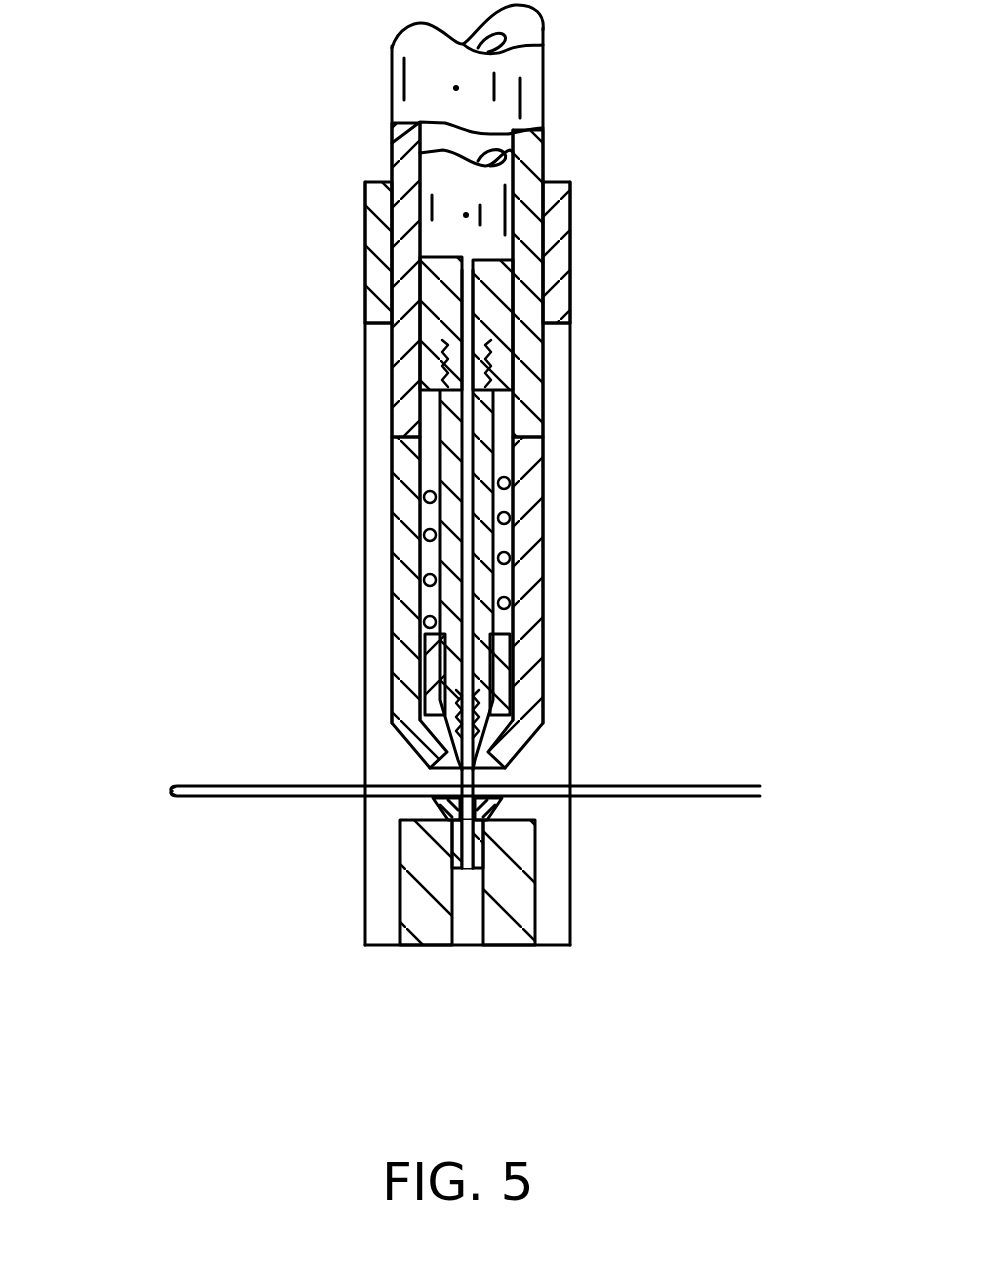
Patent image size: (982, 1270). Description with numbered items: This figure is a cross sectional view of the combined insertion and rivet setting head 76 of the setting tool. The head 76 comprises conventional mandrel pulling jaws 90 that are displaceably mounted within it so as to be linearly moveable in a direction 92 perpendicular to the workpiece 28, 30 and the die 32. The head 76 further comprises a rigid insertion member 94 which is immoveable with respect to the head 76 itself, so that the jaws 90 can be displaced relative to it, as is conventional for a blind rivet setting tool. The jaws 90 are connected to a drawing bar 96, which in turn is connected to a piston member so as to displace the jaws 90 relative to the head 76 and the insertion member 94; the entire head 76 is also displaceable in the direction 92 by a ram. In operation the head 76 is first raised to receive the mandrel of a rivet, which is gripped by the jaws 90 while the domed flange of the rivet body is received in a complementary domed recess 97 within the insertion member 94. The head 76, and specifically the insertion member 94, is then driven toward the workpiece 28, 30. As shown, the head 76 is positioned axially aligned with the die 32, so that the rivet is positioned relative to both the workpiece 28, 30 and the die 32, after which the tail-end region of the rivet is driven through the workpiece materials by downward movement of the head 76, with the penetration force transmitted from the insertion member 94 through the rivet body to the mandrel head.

The combined insertion and rivet setting head 76 is at (664, 167).
The drawing bar 96 is at (497, 432).
The rigid insertion member 94 is at (538, 587).
The mandrel pulling jaws 90 is at (483, 707).
The domed recess 97 is at (460, 778).
The workpiece 28 is at (197, 782).
The workpiece 30 is at (183, 796).
The die 32 is at (525, 845).
The direction 92 is at (294, 425).